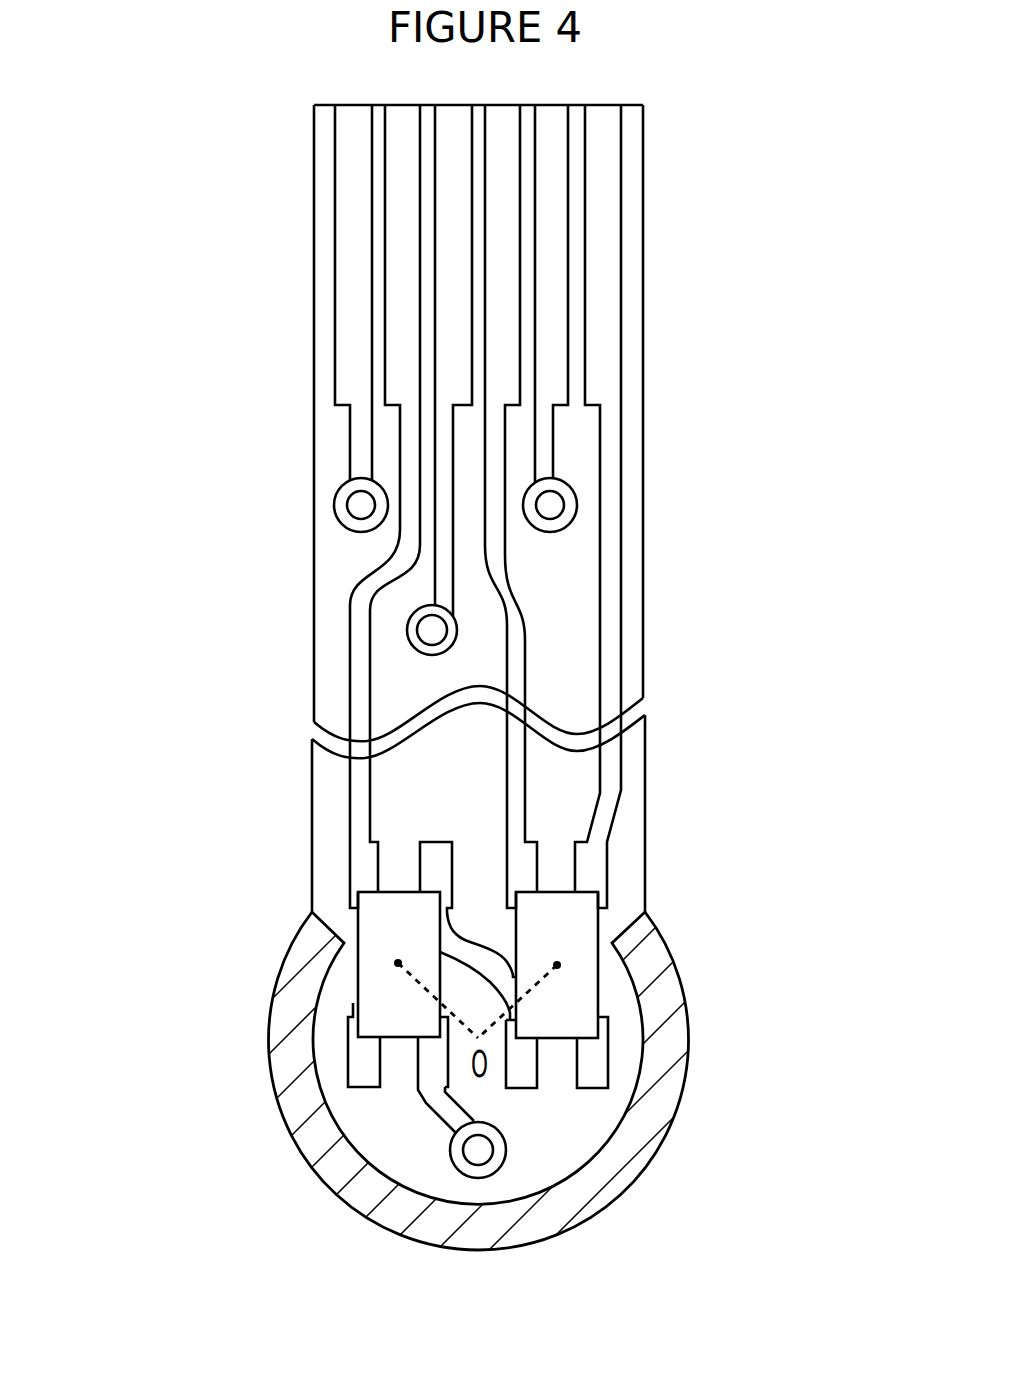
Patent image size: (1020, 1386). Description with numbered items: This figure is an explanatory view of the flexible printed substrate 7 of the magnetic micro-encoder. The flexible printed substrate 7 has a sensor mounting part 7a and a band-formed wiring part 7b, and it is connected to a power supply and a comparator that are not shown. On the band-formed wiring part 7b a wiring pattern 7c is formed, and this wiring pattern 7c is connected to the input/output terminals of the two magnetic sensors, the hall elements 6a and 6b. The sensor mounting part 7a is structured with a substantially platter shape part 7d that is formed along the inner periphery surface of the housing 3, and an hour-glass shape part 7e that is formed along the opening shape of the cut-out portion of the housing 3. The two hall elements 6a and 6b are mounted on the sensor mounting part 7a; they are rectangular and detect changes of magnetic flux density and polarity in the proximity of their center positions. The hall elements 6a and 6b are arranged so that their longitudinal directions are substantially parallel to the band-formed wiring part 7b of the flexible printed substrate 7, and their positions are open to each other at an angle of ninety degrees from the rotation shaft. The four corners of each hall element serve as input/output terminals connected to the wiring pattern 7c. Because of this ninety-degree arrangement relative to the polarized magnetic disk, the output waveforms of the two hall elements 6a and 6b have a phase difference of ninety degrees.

The flexible printed substrate 7 is at (693, 468).
The sensor mounting part 7a is at (328, 1037).
The band-formed wiring part 7b is at (340, 560).
The wiring pattern 7c is at (508, 598).
The platter shape part 7d is at (637, 1108).
The hour-glass shape part 7e is at (645, 947).
The hall element 6a is at (385, 927).
The hall element 6b is at (573, 1000).
The housing 3 is at (278, 1118).